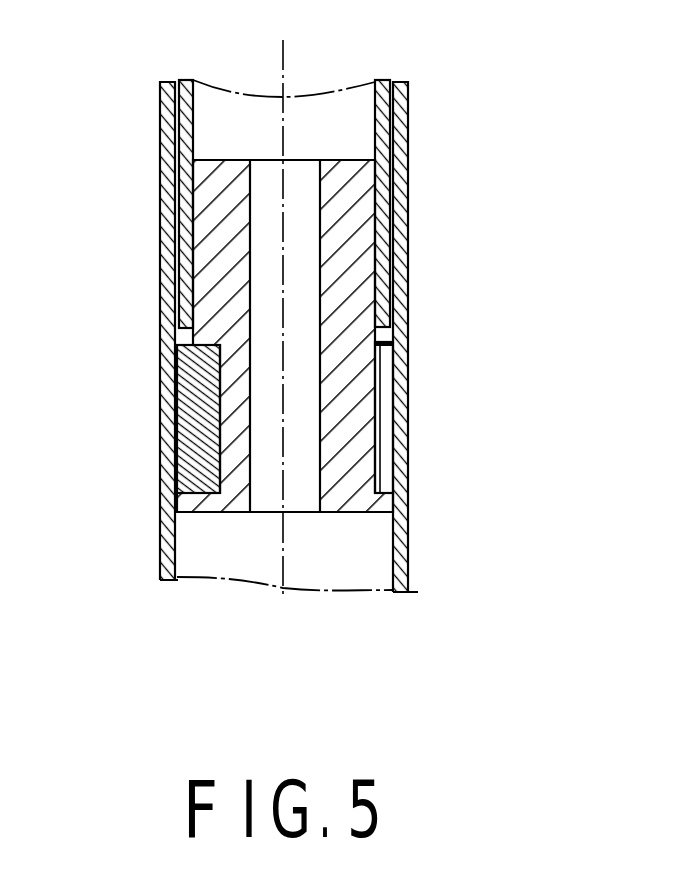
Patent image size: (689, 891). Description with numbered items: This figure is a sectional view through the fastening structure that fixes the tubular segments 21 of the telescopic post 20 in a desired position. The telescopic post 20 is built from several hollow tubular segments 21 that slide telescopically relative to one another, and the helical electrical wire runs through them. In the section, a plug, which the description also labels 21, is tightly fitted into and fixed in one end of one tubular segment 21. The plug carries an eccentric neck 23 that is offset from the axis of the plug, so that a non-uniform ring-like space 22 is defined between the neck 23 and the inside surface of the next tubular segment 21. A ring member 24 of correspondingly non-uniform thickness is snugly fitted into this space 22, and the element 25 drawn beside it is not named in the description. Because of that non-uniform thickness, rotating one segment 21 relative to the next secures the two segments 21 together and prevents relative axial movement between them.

The telescopic post 20 is at (178, 252).
The tubular segment 21 is at (350, 262).
The non-uniform ring-like space 22 is at (390, 473).
The eccentric neck 23 is at (350, 410).
The ring member 24 is at (383, 370).
The groove 25 is at (377, 443).